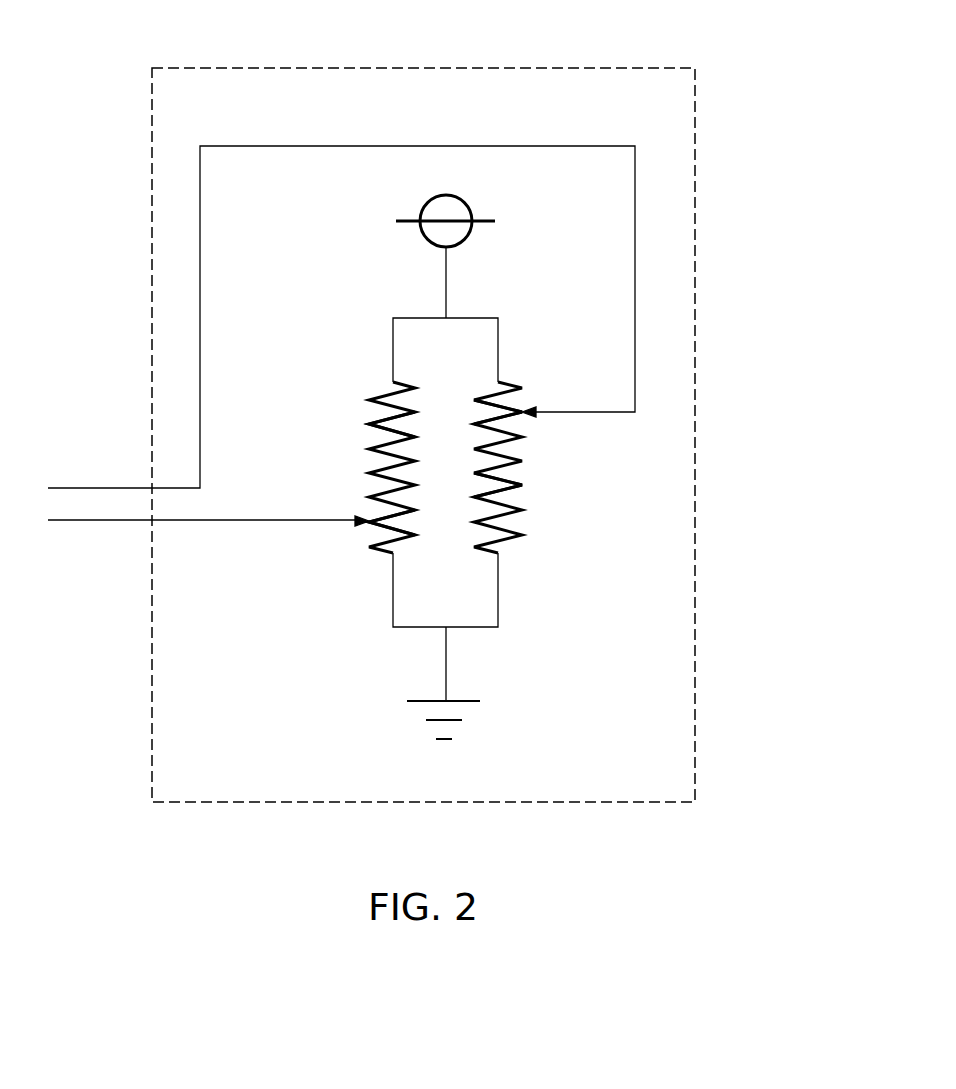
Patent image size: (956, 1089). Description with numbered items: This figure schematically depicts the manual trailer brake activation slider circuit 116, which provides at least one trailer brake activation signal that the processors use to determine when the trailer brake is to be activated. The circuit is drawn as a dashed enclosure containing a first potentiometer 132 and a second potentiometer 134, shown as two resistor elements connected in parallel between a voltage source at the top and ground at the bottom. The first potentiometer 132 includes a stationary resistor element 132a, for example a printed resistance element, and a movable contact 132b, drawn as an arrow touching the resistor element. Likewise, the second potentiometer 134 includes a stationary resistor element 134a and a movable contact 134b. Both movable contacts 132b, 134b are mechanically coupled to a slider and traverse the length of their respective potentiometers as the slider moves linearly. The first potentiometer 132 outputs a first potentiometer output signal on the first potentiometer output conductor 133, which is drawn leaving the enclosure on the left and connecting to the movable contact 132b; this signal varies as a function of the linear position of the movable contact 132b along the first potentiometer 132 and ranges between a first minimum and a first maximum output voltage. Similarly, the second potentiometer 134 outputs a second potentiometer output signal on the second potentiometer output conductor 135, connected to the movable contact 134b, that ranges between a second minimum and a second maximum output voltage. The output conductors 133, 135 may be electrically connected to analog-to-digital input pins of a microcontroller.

The manual trailer brake activation slider circuit 116 is at (565, 68).
The first potentiometer 132 is at (523, 547).
The stationary resistor element 132a is at (522, 485).
The movable contact 132b is at (563, 412).
The first potentiometer output conductor 133 is at (67, 488).
The second potentiometer 134 is at (378, 568).
The stationary resistor element 134a is at (369, 424).
The movable contact 134b is at (325, 520).
The second potentiometer output conductor 135 is at (72, 522).